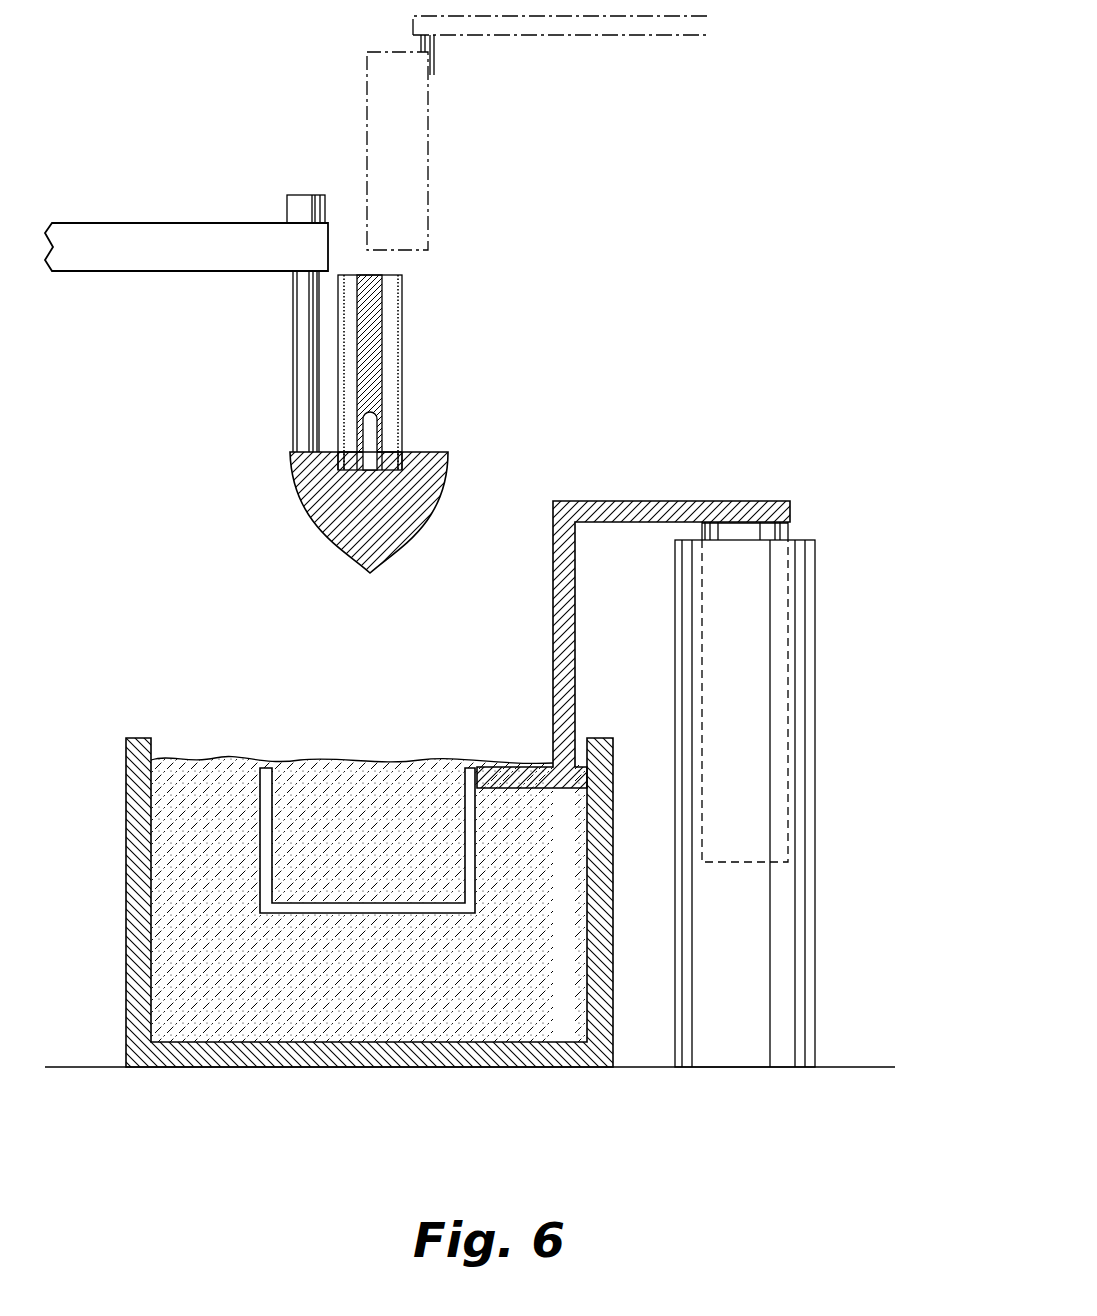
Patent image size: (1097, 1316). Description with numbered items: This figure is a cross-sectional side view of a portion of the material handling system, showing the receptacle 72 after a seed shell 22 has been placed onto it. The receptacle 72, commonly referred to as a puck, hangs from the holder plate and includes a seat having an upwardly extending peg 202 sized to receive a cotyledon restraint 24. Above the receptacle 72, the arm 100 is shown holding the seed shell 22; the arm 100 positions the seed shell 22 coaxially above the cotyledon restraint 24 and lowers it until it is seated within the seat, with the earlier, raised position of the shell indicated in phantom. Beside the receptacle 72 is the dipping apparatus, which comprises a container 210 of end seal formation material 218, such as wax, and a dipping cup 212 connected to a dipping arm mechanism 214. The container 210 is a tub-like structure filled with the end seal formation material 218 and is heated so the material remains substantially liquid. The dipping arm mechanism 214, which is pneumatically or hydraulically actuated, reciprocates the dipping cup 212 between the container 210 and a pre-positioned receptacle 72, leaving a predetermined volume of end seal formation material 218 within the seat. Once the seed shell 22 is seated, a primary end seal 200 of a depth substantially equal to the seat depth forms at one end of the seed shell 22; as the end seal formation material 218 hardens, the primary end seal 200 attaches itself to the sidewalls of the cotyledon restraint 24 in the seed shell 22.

The seed shell 22 is at (367, 128).
The cotyledon restraint 24 is at (383, 325).
The receptacle 72 is at (311, 522).
The arm 100 is at (590, 40).
The primary end seal 200 is at (398, 451).
The peg 202 is at (367, 447).
The container 210 is at (330, 861).
The dipping cup 212 is at (327, 913).
The dipping arm mechanism 214 is at (818, 697).
The end seal formation material 218 is at (205, 758).